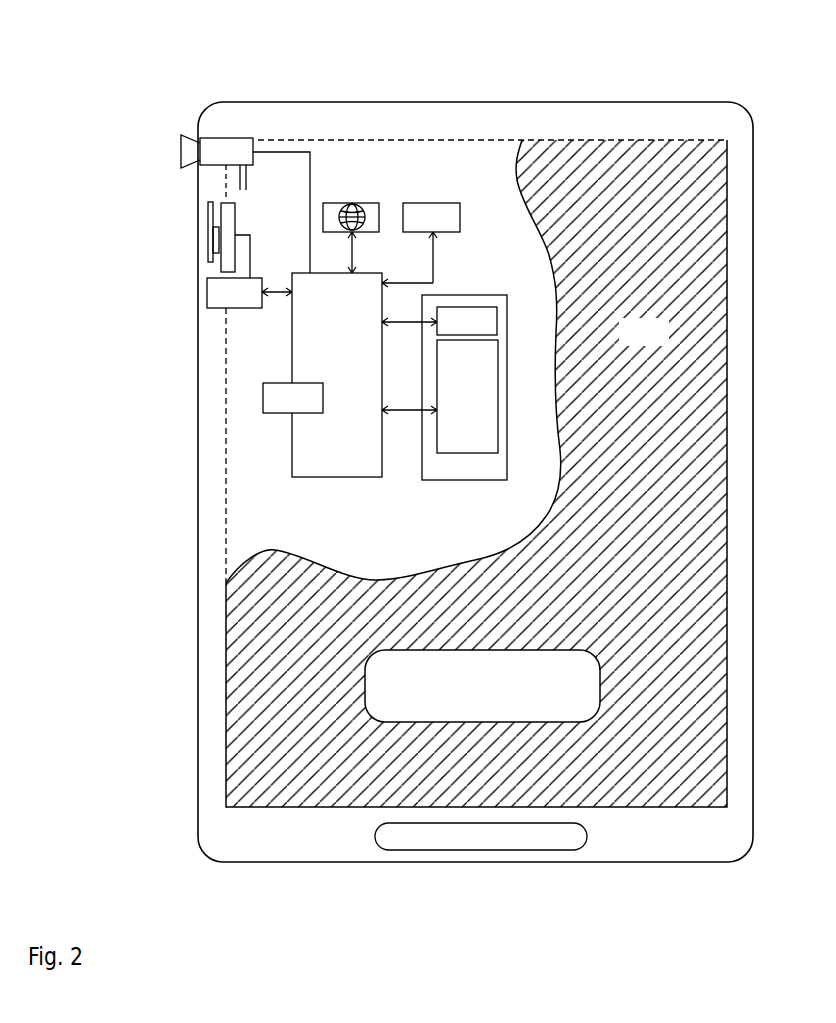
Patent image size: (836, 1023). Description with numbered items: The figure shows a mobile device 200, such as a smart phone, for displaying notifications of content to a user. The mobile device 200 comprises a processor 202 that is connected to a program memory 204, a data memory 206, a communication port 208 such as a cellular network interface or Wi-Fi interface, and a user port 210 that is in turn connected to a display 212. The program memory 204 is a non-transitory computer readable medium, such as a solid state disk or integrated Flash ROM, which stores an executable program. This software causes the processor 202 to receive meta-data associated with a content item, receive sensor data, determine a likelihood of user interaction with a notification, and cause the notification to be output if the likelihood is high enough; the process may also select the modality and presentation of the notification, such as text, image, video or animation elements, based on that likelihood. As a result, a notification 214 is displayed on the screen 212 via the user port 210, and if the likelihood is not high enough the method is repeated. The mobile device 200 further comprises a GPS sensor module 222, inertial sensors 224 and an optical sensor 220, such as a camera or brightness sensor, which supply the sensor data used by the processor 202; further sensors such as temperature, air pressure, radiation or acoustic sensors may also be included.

The mobile device 200 is at (292, 76).
The processor 202 is at (327, 477).
The program memory 204 is at (480, 307).
The data memory 206 is at (467, 453).
The communication port 208 is at (253, 305).
The user port 210 is at (311, 410).
The display 212 is at (661, 342).
The notification 214 is at (590, 711).
The optical sensor 220 is at (235, 138).
The GPS sensor module 222 is at (354, 203).
The inertial sensors 224 is at (434, 203).